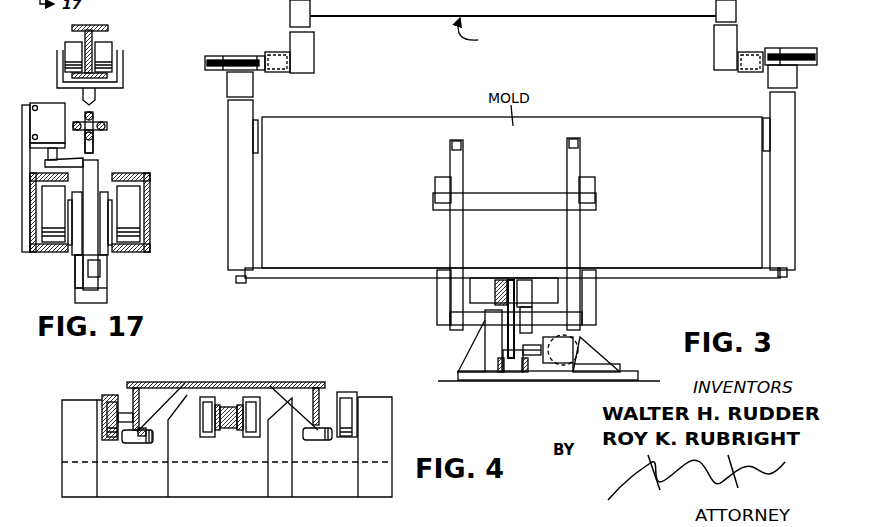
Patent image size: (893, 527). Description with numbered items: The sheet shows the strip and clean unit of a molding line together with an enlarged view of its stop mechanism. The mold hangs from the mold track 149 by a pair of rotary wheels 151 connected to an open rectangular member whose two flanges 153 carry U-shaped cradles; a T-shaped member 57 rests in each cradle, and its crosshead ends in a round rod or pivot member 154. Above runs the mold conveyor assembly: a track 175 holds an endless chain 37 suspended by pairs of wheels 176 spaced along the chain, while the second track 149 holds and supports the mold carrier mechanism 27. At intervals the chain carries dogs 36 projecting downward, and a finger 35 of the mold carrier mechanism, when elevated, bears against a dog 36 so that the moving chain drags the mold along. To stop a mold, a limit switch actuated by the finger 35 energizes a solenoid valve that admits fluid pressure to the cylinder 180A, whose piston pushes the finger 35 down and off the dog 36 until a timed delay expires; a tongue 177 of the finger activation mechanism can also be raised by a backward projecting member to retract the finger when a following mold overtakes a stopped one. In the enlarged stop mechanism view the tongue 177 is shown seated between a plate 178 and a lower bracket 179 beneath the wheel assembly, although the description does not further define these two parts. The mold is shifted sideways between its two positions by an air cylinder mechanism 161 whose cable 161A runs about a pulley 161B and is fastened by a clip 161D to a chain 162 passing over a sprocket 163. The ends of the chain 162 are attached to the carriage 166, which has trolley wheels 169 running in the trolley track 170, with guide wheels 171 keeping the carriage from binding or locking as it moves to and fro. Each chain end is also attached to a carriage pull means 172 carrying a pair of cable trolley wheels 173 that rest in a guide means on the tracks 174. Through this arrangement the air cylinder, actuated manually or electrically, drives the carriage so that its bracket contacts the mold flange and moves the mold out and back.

In FIG. 3, the mold carrier mechanism 27 is at (478, 33).
In FIG. 17, the finger 35 is at (88, 163).
In FIG. 17, the dog 36 is at (92, 147).
In FIG. 17, the endless chain 37 is at (100, 123).
In FIG. 3, the T-shaped member 57 is at (230, 125).
In FIG. 17, the mold track 149 is at (150, 184).
In FIG. 17, the rotary wheels 151 is at (132, 204).
In FIG. 3, the flanges 153 is at (282, 73).
In FIG. 3, the pivot member 154 is at (219, 58).
In FIG. 3, the air cylinder mechanism 161 is at (598, 352).
In FIG. 3, the cable 161A is at (526, 355).
In FIG. 3, the pulley 161B is at (568, 345).
In FIG. 3, the clip 161D is at (527, 347).
In FIG. 3, the chain 162 is at (512, 280).
In FIG. 3, the sprocket 163 is at (500, 280).
In FIG. 4, the carriage 166 is at (281, 382).
In FIG. 4, the trolley wheels 169 is at (110, 420).
In FIG. 3, the trolley track 170 is at (451, 158).
In FIG. 4, the trolley track 170 is at (103, 397).
In FIG. 4, the guide wheels 171 is at (128, 445).
In FIG. 4, the carriage pull means 172 is at (232, 408).
In FIG. 4, the cable trolley wheels 173 is at (251, 402).
In FIG. 3, the tracks 174 is at (494, 290).
In FIG. 4, the tracks 174 is at (205, 398).
In FIG. 17, the track 175 is at (105, 30).
In FIG. 17, the wheels 176 is at (68, 45).
In FIG. 17, the tongue 177 is at (92, 267).
In FIG. 17, the plate 178 is at (77, 268).
In FIG. 17, the bracket 179 is at (100, 295).
In FIG. 3, the bracket 179 is at (742, 6).
In FIG. 17, the cylinder 180A is at (50, 110).